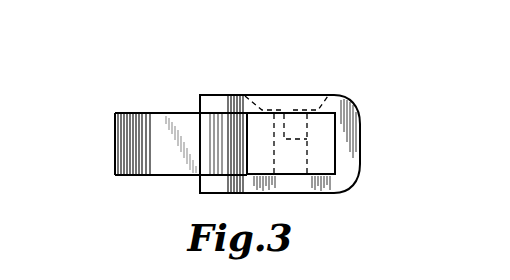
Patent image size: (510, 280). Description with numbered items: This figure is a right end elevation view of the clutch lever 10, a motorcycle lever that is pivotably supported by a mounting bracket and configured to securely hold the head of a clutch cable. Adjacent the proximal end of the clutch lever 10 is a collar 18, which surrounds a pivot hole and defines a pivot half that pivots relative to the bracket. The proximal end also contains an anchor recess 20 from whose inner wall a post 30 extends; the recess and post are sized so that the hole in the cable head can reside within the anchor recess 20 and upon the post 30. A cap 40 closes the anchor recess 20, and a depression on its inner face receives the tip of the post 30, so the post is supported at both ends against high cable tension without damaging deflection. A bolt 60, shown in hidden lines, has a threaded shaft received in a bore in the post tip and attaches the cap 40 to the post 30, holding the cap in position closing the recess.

The clutch lever 10 is at (359, 72).
The collar 18 is at (127, 148).
The anchor recess 20 is at (323, 163).
The post 30 is at (307, 139).
The cap 40 is at (332, 105).
The bolt 60 is at (274, 109).